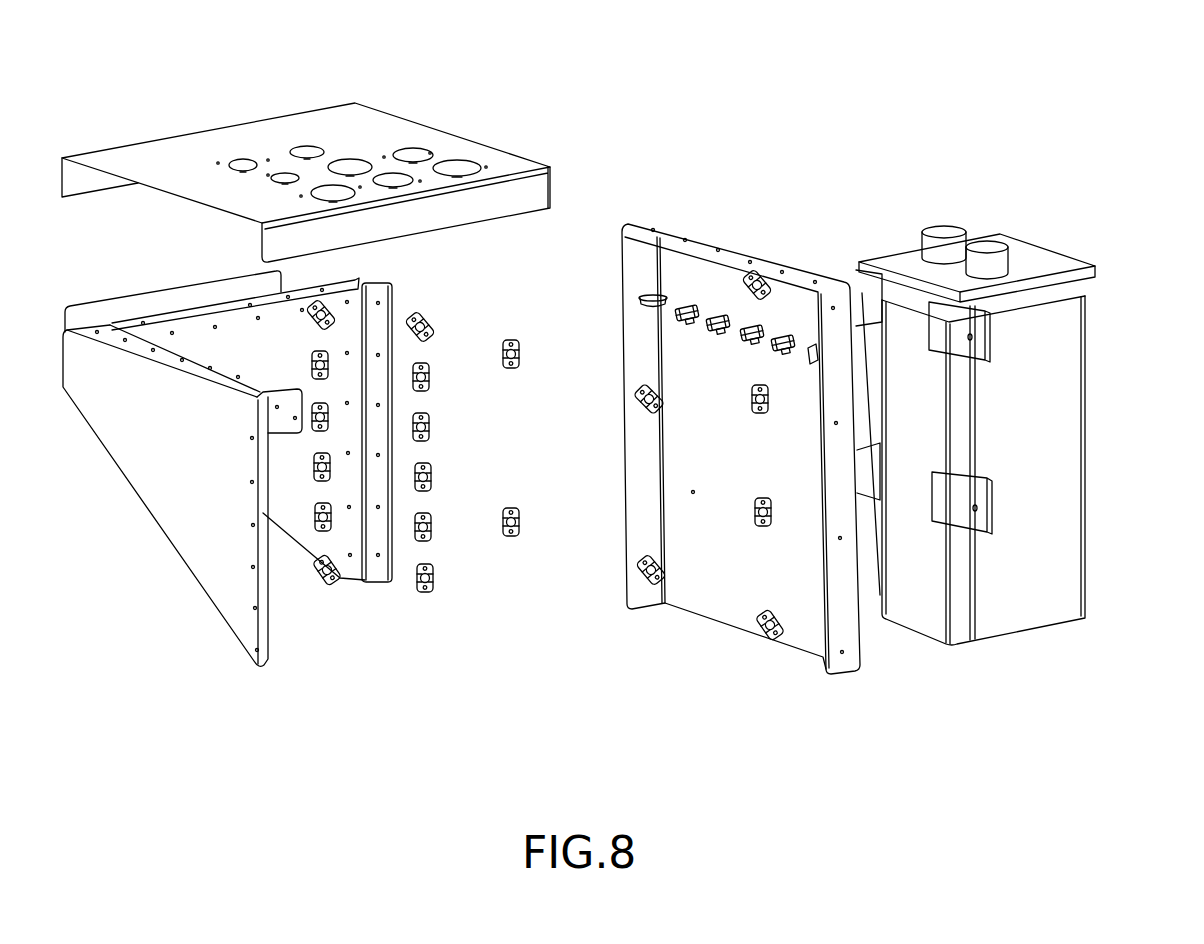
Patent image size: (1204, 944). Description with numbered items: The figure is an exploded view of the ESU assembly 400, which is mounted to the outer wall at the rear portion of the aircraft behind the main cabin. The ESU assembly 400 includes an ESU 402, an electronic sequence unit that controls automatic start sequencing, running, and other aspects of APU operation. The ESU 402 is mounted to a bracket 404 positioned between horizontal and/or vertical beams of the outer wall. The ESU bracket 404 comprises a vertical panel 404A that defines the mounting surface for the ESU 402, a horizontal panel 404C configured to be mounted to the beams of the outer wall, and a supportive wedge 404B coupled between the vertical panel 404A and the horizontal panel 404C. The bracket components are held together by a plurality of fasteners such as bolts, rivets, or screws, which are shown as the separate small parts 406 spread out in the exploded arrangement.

The ESU assembly 400 is at (138, 74).
The ESU 402 is at (1092, 442).
The bracket 404 is at (668, 222).
The vertical panel 404A is at (735, 246).
The supportive wedge 404B is at (150, 507).
The horizontal panel 404C is at (440, 130).
The clips 406 is at (425, 318).